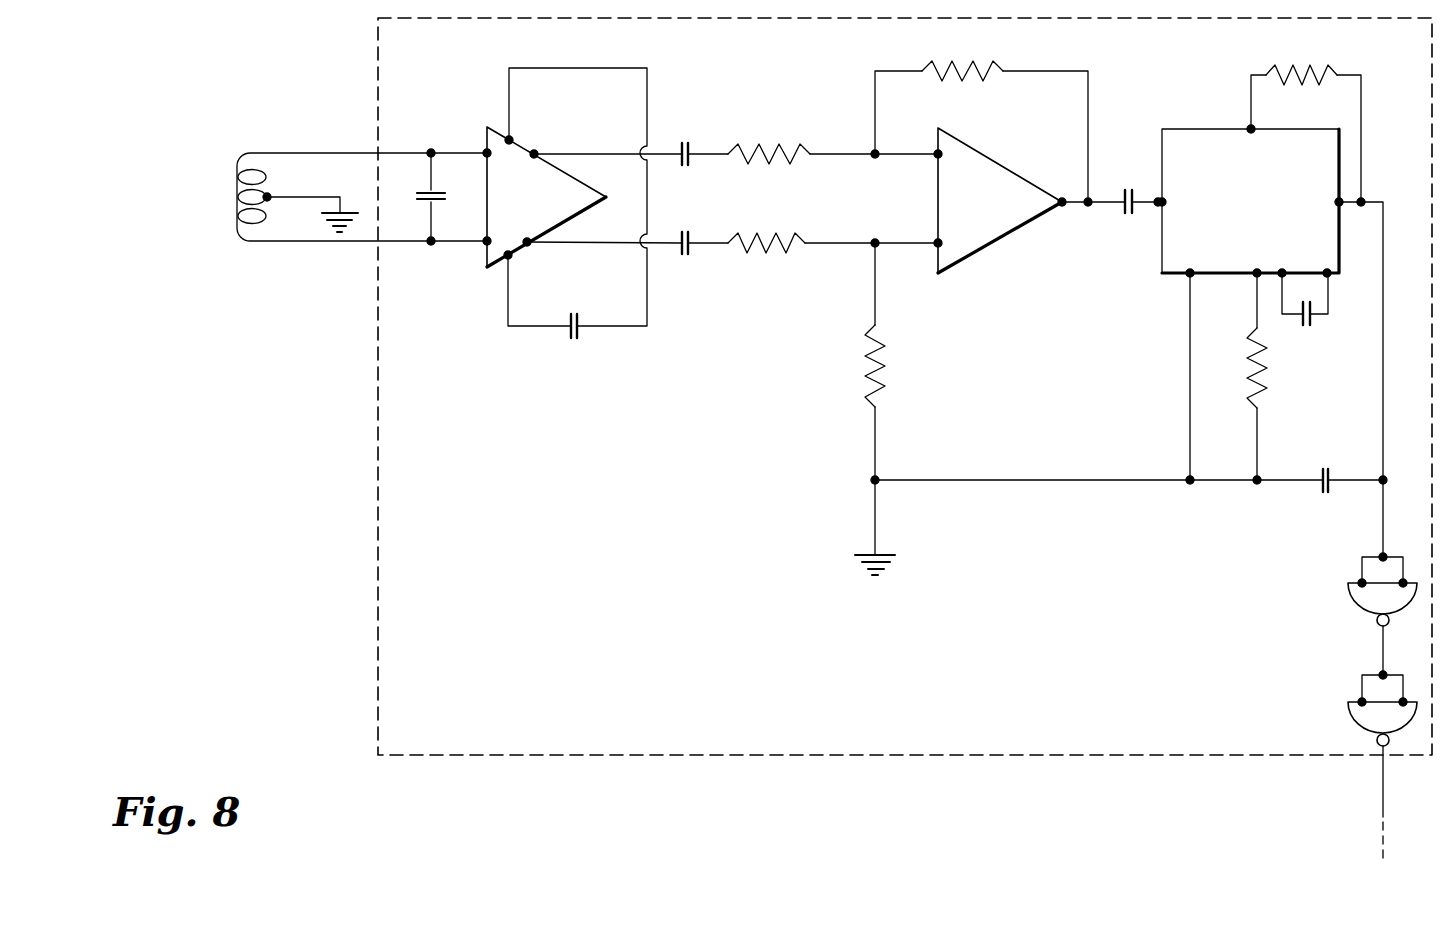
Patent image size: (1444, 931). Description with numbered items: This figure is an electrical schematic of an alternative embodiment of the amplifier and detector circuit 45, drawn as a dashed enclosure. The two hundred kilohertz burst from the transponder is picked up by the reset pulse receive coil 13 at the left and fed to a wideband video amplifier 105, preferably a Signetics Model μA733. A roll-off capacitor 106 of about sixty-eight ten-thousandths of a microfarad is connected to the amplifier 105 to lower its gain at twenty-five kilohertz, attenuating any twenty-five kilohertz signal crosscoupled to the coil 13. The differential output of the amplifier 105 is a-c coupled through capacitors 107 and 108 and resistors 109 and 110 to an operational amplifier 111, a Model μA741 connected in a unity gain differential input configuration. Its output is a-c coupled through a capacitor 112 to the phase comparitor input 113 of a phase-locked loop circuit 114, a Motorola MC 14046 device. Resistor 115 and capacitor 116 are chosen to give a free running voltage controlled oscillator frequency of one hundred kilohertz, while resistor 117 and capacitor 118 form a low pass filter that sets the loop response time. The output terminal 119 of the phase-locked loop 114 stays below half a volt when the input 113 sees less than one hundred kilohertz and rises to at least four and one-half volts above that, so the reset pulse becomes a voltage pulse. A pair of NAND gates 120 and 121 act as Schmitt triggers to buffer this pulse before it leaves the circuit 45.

The reset pulse receive coil 13 is at (232, 204).
The amplifier and detector circuit 45 is at (1268, 756).
The wideband video amplifier 105 is at (550, 211).
The roll-off capacitor 106 is at (568, 337).
The capacitor 107 is at (690, 145).
The capacitor 108 is at (693, 250).
The resistor 109 is at (797, 157).
The resistor 110 is at (752, 240).
The operational amplifier 111 is at (997, 212).
The capacitor 112 is at (1120, 210).
The phase comparitor input 113 is at (1158, 207).
The phase-locked loop circuit 114 is at (1273, 213).
The resistor 115 is at (1266, 383).
The capacitor 116 is at (1312, 320).
The resistor 117 is at (1302, 68).
The capacitor 118 is at (1319, 488).
The output terminal 119 is at (1342, 207).
The NAND gate 120 is at (1352, 603).
The NAND gate 121 is at (1348, 717).